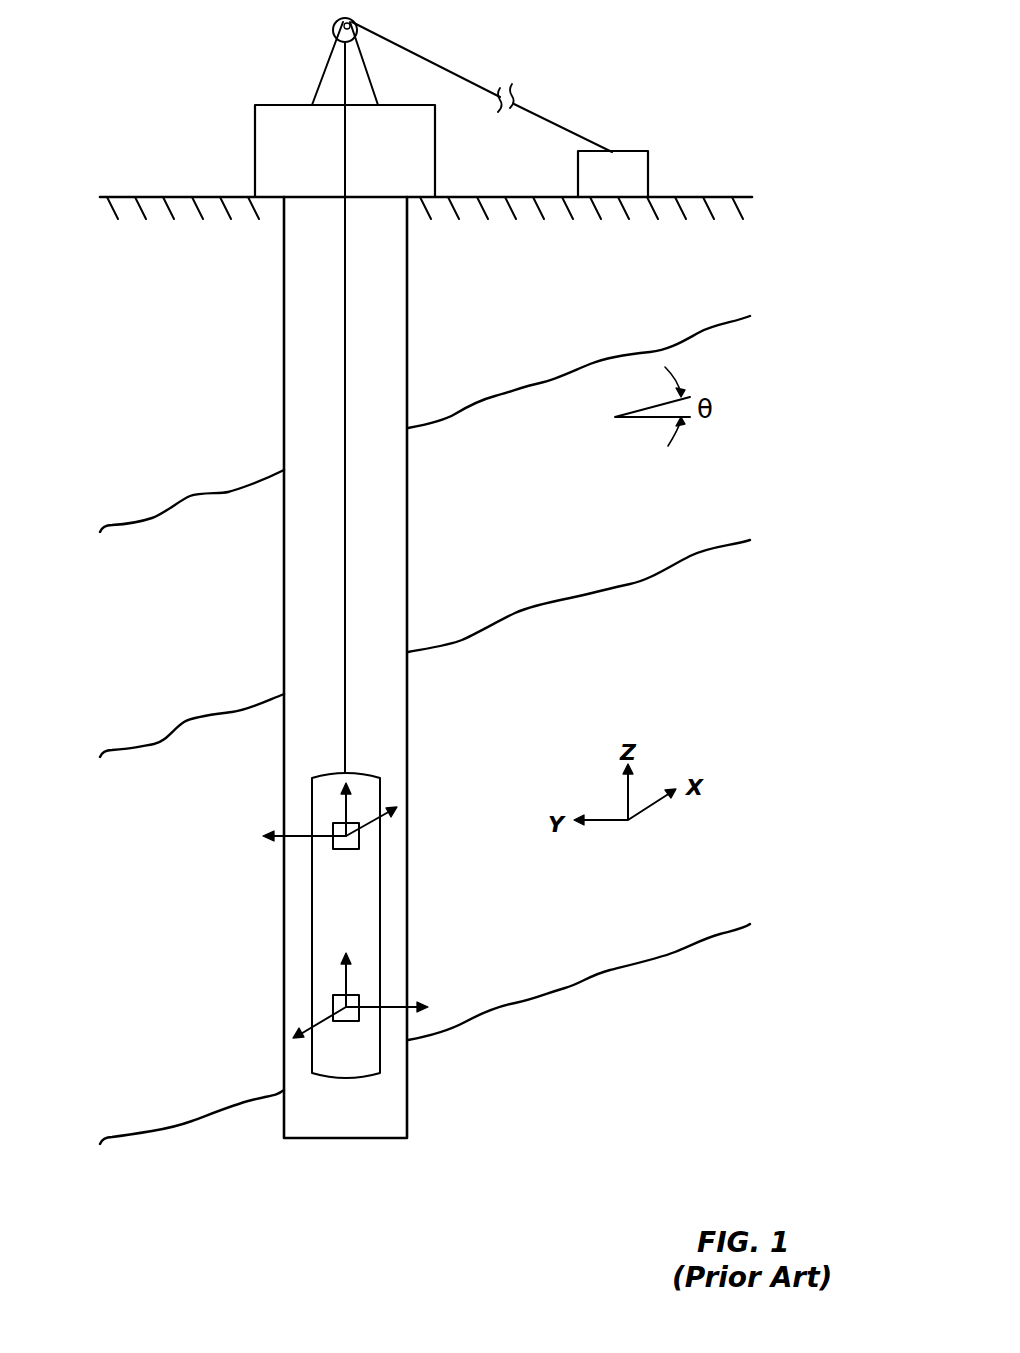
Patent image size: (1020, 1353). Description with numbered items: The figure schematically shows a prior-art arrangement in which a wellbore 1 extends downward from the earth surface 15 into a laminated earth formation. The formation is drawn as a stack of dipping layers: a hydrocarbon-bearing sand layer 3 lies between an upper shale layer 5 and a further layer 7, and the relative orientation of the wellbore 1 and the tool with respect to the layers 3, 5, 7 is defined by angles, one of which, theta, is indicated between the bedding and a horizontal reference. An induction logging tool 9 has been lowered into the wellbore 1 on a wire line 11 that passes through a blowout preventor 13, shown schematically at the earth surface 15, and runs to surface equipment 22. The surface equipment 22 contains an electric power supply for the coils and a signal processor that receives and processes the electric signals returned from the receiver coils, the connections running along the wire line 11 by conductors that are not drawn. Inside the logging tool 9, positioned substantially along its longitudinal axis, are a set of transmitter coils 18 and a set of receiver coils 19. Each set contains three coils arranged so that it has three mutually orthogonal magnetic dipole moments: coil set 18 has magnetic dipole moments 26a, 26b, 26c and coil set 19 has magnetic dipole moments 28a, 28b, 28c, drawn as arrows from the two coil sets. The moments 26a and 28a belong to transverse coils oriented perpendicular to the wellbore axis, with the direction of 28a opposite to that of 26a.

The wellbore 1 is at (320, 604).
The hydrocarbon-bearing sand layer 3 is at (164, 939).
The upper shale layer 5 is at (164, 634).
The layer 7 is at (164, 1187).
The induction logging tool 9 is at (312, 937).
The wire line 11 is at (435, 63).
The blowout preventor 13 is at (270, 140).
The earth surface 15 is at (177, 196).
The set of transmitter coils 18 is at (336, 822).
The set of receiver coils 19 is at (336, 995).
The surface equipment 22 is at (650, 167).
The magnetic dipole moment 26a is at (375, 820).
The magnetic dipole moment 26b is at (293, 836).
The magnetic dipole moment 26c is at (349, 802).
The magnetic dipole moment 28a is at (320, 1020).
The magnetic dipole moment 28b is at (390, 1007).
The magnetic dipole moment 28c is at (348, 970).